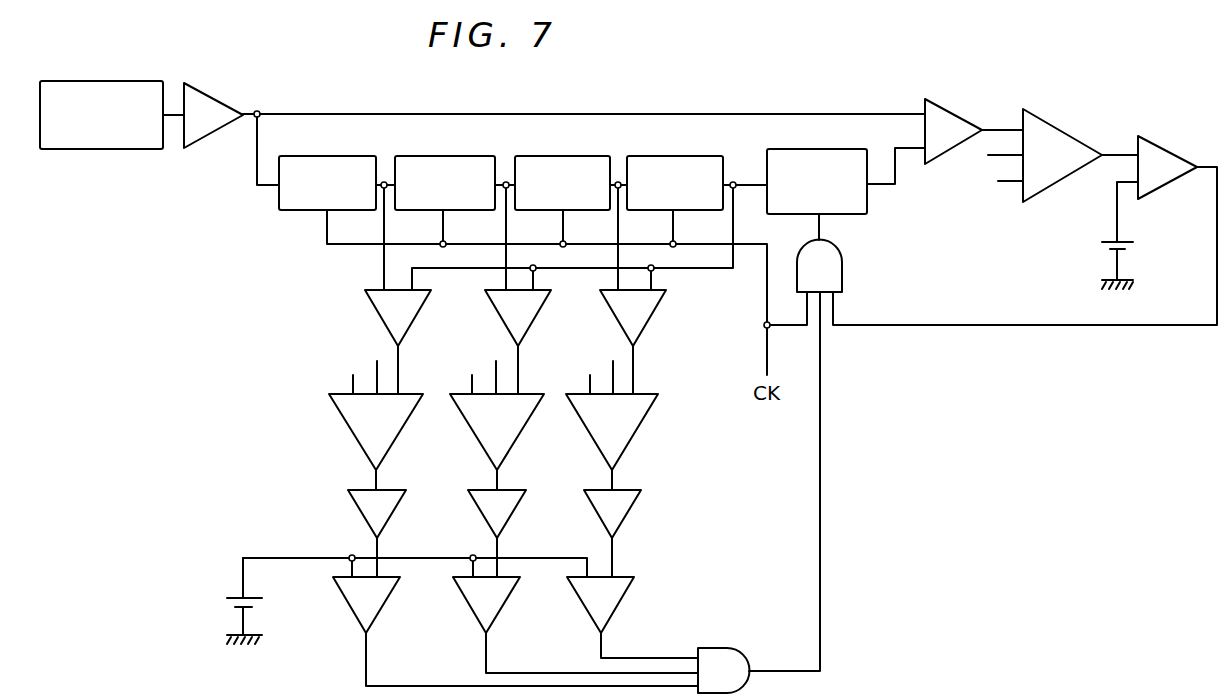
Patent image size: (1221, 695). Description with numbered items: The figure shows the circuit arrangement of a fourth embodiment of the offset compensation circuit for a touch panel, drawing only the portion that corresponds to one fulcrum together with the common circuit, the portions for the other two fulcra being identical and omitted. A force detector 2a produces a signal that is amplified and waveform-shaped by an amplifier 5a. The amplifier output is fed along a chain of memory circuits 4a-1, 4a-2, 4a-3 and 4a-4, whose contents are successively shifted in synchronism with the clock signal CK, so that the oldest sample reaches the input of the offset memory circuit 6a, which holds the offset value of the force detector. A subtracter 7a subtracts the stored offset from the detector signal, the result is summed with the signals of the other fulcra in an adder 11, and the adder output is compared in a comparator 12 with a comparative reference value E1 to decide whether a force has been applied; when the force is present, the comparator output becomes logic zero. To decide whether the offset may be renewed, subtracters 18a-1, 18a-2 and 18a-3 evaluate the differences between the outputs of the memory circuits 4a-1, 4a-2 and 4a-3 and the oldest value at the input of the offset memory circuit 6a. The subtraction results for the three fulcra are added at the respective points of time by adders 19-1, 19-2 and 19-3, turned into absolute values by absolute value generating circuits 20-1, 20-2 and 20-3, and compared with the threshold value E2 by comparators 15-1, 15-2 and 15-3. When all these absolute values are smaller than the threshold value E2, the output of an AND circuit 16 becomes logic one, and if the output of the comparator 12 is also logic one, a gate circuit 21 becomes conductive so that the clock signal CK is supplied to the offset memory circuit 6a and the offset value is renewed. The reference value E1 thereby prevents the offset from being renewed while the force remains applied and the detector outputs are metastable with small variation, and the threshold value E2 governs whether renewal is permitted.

The force detector 2a is at (109, 80).
The amplifier 5a is at (212, 95).
The memory circuit 4a-1 is at (303, 156).
The memory circuit 4a-2 is at (420, 156).
The memory circuit 4a-3 is at (545, 156).
The memory circuit 4a-4 is at (650, 156).
The offset memory circuit 6a is at (805, 149).
The subtracter 7a is at (948, 107).
The adder 11 is at (1058, 129).
The comparator 12 is at (1166, 148).
The comparative reference value E1 is at (1133, 243).
The gate circuit 21 is at (842, 262).
The subtracter 18a-1 is at (420, 305).
The subtracter 18a-2 is at (540, 305).
The subtracter 18a-3 is at (655, 305).
The adder 19-1 is at (406, 426).
The adder 19-2 is at (526, 426).
The adder 19-3 is at (640, 426).
The absolute value generating circuit 20-1 is at (397, 506).
The absolute value generating circuit 20-2 is at (517, 506).
The absolute value generating circuit 20-3 is at (632, 506).
The comparator 15-1 is at (390, 592).
The comparator 15-2 is at (510, 592).
The comparator 15-3 is at (625, 592).
The threshold value E2 is at (258, 600).
The AND circuit 16 is at (744, 648).